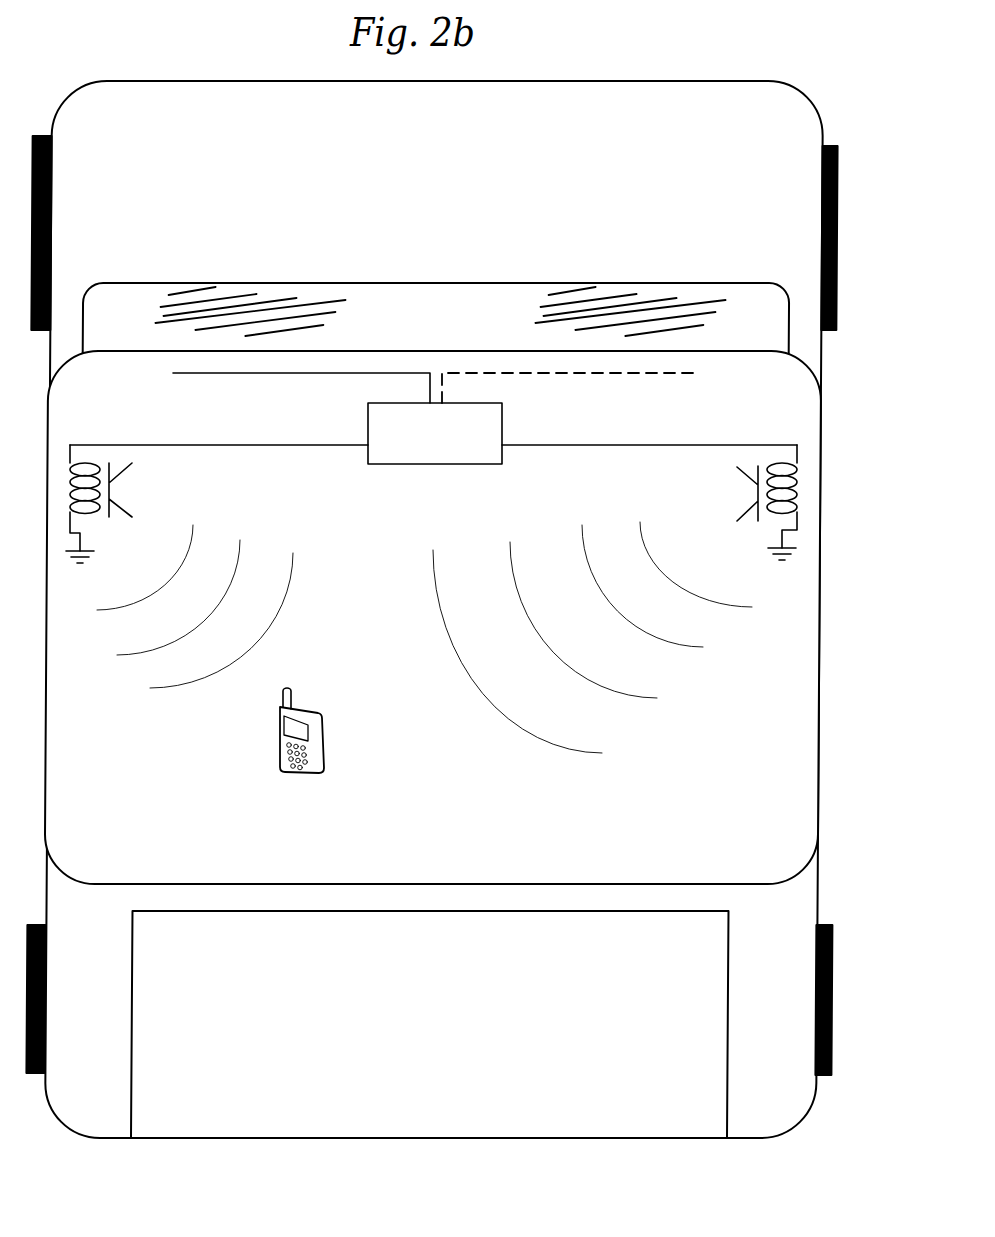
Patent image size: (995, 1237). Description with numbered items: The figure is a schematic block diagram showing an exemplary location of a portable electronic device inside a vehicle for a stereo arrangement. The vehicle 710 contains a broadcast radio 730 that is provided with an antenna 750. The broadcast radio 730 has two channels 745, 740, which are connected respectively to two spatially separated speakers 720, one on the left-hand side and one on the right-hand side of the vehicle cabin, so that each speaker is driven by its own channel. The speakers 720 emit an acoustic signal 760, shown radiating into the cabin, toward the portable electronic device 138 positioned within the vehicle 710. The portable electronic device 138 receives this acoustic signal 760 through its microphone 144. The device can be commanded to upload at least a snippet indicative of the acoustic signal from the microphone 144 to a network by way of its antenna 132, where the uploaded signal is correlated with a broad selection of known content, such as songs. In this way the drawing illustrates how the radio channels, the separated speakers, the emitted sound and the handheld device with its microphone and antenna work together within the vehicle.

The vehicle 710 is at (568, 133).
The speaker 720 is at (85, 509).
The broadcast radio 730 is at (493, 421).
The channel 740 is at (478, 464).
The channel 745 is at (398, 464).
The antenna 750 is at (684, 374).
The acoustic signal 760 is at (112, 608).
The antenna 132 is at (292, 700).
The portable electronic device 138 is at (313, 735).
The microphone 144 is at (295, 773).